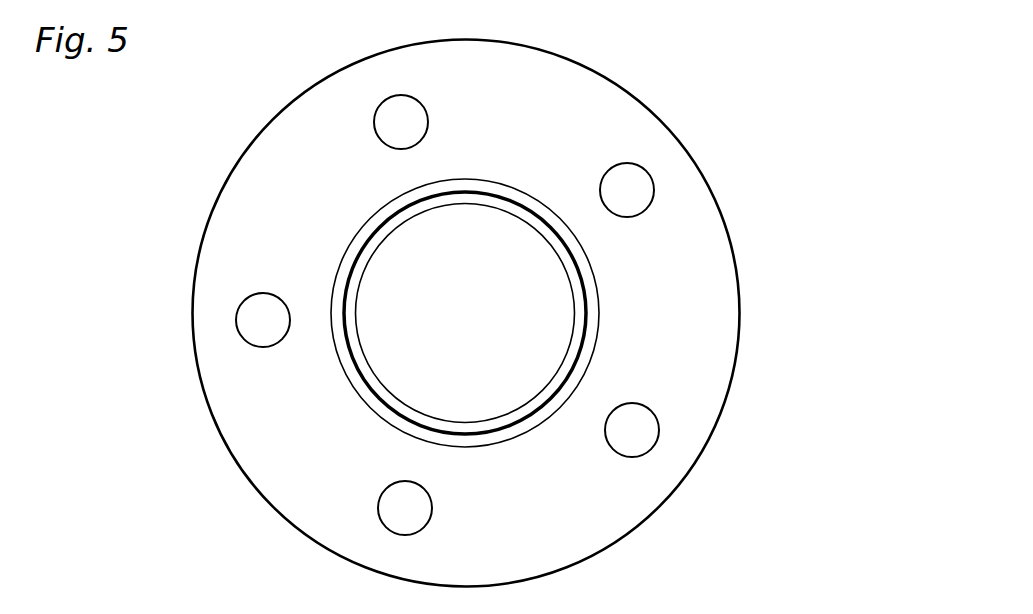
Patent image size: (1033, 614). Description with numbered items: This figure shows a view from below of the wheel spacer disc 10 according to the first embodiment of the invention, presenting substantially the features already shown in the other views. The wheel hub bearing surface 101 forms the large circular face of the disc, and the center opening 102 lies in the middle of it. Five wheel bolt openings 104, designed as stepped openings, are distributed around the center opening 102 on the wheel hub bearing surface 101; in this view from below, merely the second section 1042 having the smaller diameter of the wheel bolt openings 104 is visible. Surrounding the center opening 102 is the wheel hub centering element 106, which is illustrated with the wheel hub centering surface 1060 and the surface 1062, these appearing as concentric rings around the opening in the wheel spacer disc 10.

The wheel spacer disc 10 is at (756, 88).
The wheel hub bearing surface 101 is at (700, 322).
The center opening 102 is at (468, 228).
The wheel bolt openings 104 is at (256, 320).
The second section 1042 is at (629, 414).
The wheel hub centering element 106 is at (400, 261).
The wheel hub centering surface 1060 is at (587, 317).
The surface 1062 is at (360, 346).